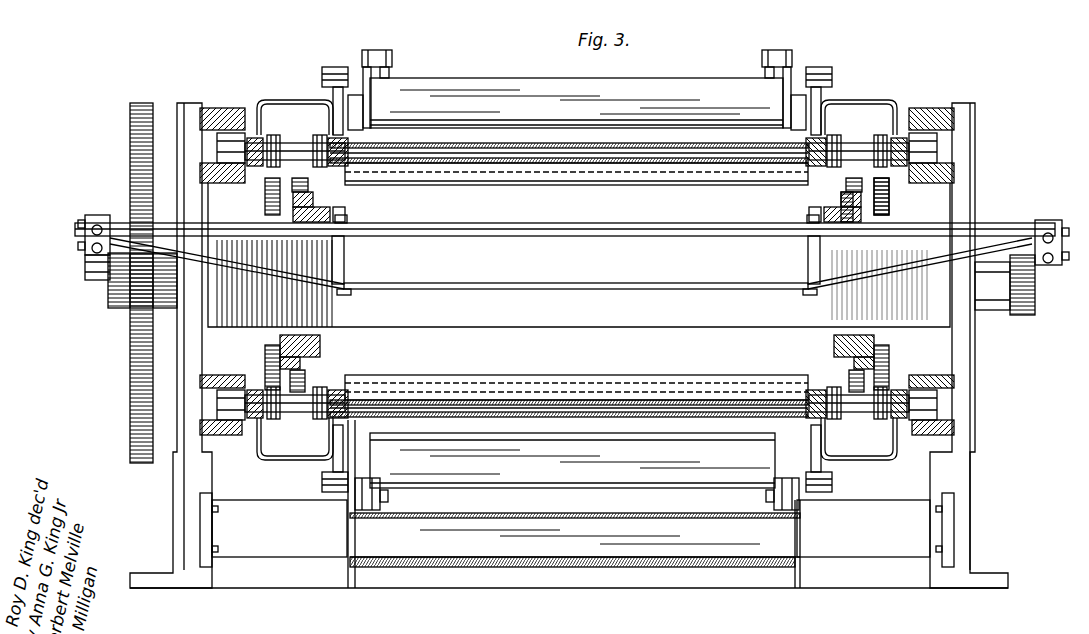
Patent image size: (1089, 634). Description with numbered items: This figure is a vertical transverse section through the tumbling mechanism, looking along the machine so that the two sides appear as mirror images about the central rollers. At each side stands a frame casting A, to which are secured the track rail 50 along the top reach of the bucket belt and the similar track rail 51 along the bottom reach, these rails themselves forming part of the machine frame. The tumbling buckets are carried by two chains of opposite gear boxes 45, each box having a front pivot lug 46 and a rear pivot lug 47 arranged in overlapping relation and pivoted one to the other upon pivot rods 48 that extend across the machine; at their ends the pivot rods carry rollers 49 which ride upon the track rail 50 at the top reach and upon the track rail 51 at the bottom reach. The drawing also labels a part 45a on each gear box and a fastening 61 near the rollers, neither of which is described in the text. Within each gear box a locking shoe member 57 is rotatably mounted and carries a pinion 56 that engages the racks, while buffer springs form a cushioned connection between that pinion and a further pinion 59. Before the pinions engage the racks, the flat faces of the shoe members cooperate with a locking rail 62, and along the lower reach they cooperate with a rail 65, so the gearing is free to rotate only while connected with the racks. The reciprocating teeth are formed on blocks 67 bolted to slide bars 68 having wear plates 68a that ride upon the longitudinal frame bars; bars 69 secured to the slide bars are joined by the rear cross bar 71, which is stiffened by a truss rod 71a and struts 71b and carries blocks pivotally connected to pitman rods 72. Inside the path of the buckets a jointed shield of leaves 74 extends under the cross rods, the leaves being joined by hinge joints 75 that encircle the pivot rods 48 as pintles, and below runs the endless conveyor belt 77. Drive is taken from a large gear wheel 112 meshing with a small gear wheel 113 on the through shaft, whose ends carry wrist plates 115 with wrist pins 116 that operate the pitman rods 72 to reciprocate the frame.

The frame casting A is at (175, 508).
The gear box 45 is at (286, 100).
The cap bolt 45a is at (334, 67).
The front pivot lug 46 is at (258, 140).
The rear pivot lug 47 is at (318, 139).
The pivot rod 48 is at (255, 165).
The roller 49 is at (233, 135).
The track rail 50 is at (200, 176).
The track rail 51 is at (225, 437).
The pinion 56 is at (841, 200).
The locking shoe member 57 is at (889, 195).
The pinion 59 is at (265, 355).
The clamp bolt 61 is at (378, 50).
The locking rail 62 is at (265, 210).
The rail 65 is at (302, 362).
The block 67 is at (305, 208).
The slide bar 68 is at (332, 208).
The wear plate 68a is at (348, 213).
The bar 69 is at (348, 223).
The cross bar 71 is at (553, 236).
The truss rod 71a is at (478, 289).
The strut 71b is at (345, 268).
The pitman rod 72 is at (85, 250).
The leaf 74 is at (520, 185).
The hinge joint 75 is at (572, 145).
The endless conveyor belt 77 is at (494, 532).
The large gear wheel 112 is at (130, 383).
The small gear wheel 113 is at (140, 308).
The wrist plate 115 is at (1062, 280).
The wrist pin 116 is at (85, 270).